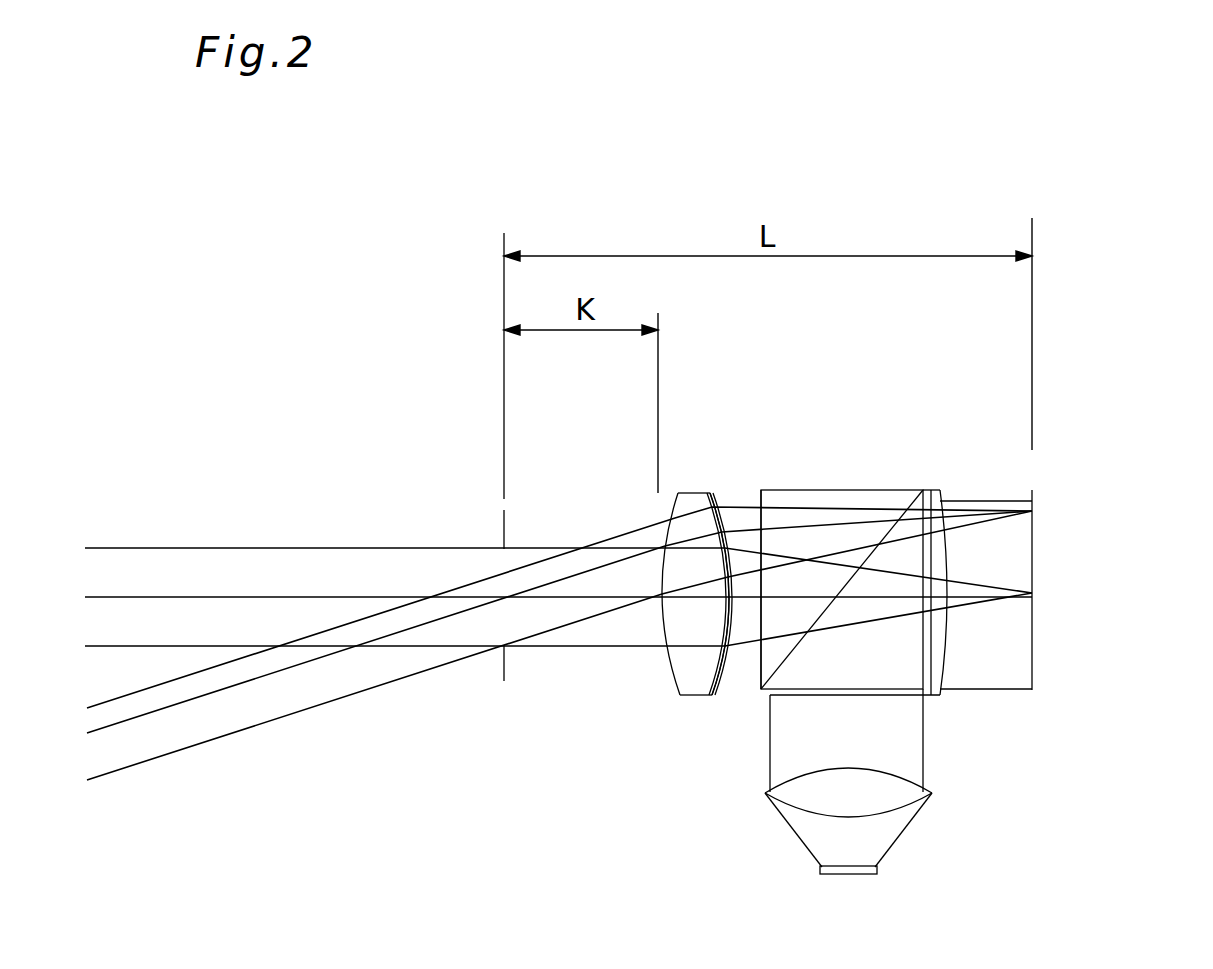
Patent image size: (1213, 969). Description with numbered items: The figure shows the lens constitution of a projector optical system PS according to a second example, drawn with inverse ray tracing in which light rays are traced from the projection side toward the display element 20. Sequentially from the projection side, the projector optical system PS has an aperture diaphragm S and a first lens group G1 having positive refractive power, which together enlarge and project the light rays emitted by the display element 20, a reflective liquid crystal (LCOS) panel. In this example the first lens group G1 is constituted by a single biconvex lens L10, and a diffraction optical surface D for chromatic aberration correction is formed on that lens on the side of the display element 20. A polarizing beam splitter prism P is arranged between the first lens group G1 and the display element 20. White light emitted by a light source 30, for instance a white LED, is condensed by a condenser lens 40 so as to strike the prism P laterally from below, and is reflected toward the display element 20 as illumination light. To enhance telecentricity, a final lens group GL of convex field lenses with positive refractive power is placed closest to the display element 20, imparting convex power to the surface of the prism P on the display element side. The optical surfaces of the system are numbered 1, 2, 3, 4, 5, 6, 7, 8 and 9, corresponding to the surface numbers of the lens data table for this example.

The surface number 1 is at (504, 681).
The surface number 2 is at (668, 684).
The surface number 3 is at (689, 695).
The surface number 4 is at (703, 693).
The surface number 5 is at (703, 693).
The surface number 6 is at (716, 691).
The surface number 7 is at (758, 691).
The surface number 8 is at (939, 696).
The surface number 9 is at (943, 662).
The display element 20 is at (1033, 493).
The light source 30 is at (868, 874).
The condenser lens 40 is at (920, 795).
The aperture diaphragm S is at (507, 510).
The single lens L10 is at (676, 611).
The diffraction optical surface D is at (711, 491).
The first lens group G1 is at (768, 411).
The polarizing beam splitter prism P is at (832, 611).
The final lens group GL is at (886, 590).
The projector optical system PS is at (1106, 208).